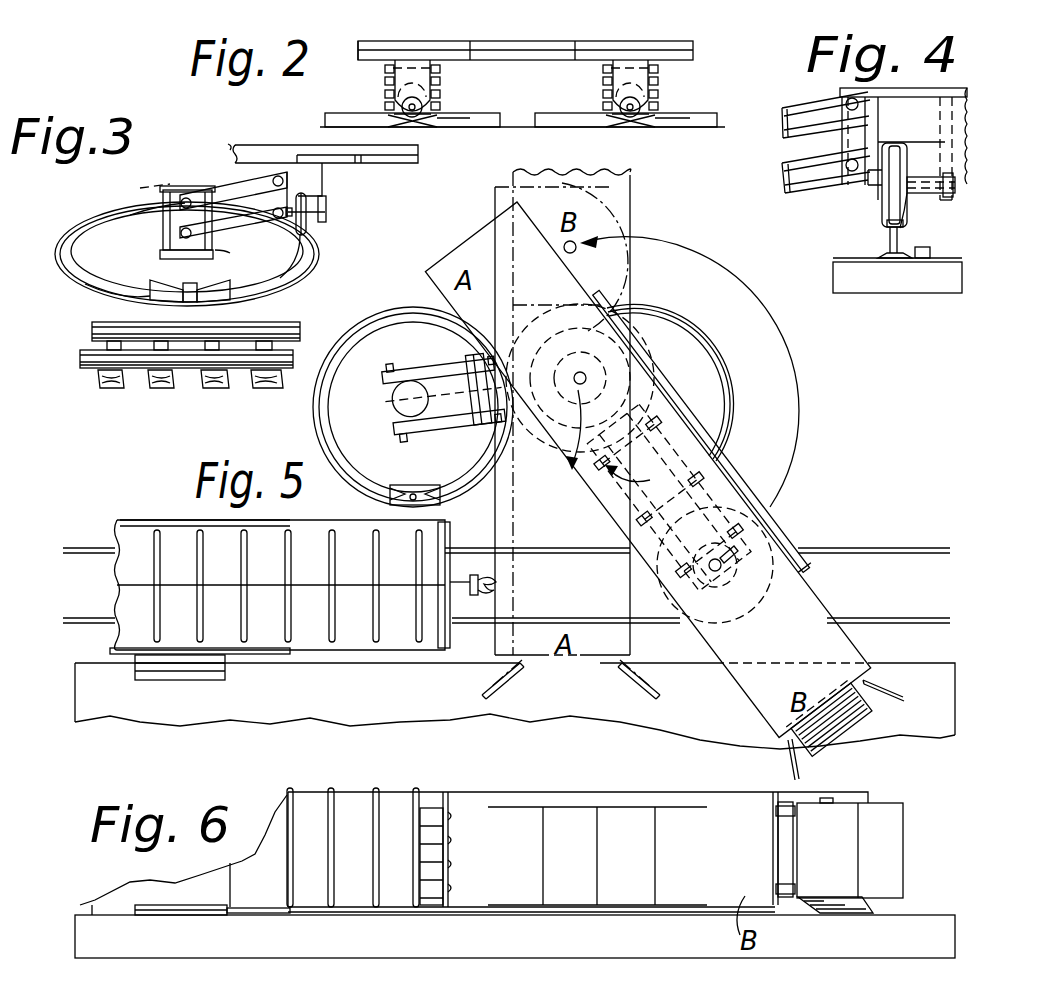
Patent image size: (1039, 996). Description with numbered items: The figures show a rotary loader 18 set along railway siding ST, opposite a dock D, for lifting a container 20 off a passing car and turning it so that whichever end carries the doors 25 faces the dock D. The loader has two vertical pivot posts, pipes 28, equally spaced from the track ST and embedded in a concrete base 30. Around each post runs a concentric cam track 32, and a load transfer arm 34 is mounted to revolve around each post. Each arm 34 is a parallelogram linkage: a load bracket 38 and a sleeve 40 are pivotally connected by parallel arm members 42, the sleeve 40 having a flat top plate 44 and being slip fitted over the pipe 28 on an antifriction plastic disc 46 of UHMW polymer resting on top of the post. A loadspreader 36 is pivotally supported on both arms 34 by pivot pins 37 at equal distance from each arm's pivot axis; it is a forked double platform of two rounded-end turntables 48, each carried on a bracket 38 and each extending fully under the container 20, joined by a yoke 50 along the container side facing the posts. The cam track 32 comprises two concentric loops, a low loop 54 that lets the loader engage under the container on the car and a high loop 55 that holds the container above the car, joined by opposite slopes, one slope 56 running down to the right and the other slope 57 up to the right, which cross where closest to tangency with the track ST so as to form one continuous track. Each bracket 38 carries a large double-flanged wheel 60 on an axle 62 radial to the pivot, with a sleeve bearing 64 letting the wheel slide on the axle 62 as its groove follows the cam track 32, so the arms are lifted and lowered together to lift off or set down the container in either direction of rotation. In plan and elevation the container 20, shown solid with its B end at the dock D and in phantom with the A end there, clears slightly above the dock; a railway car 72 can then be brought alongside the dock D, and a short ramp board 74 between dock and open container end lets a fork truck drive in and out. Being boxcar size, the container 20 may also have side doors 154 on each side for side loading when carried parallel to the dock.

In FIG. 2, the rotary loader 18 is at (686, 46).
In FIG. 3, the rotary loader 18 is at (183, 170).
In FIG. 4, the rotary loader 18 is at (797, 202).
In FIG. 5, the container 20 is at (836, 634).
In FIG. 6, the container 20 is at (483, 793).
In FIG. 5, the doors 25 is at (900, 698).
In FIG. 6, the doors 25 is at (870, 852).
In FIG. 3, the pivot post (pipe) 28 is at (215, 250).
In FIG. 5, the pivot post (pipe) 28 is at (640, 364).
In FIG. 3, the concrete base 30 is at (165, 256).
In FIG. 2, the cam track 32 is at (560, 120).
In FIG. 3, the cam track 32 is at (70, 240).
In FIG. 4, the cam track 32 is at (846, 297).
In FIG. 2, the load transfer arm 34 is at (402, 70).
In FIG. 3, the load transfer arm 34 is at (322, 190).
In FIG. 4, the load transfer arm 34 is at (813, 100).
In FIG. 5, the load transfer arm 34 is at (402, 378).
In FIG. 2, the loadspreader 36 is at (370, 60).
In FIG. 3, the loadspreader 36 is at (240, 152).
In FIG. 5, the loadspreader 36 is at (735, 552).
In FIG. 5, the pivot pins 37 is at (588, 372).
In FIG. 2, the load bracket 38 is at (608, 92).
In FIG. 3, the load bracket 38 is at (320, 206).
In FIG. 4, the load bracket 38 is at (856, 202).
In FIG. 3, the sleeve 40 is at (130, 215).
In FIG. 2, the parallel arm members 42 is at (658, 70).
In FIG. 3, the parallel arm members 42 is at (228, 196).
In FIG. 4, the parallel arm members 42 is at (786, 178).
In FIG. 5, the parallel arm members 42 is at (458, 386).
In FIG. 3, the flat top plate 44 is at (182, 186).
In FIG. 3, the antifriction plastic disc 46 is at (138, 191).
In FIG. 2, the turntables 48 is at (478, 50).
In FIG. 3, the turntables 48 is at (401, 165).
In FIG. 2, the yoke 50 is at (512, 58).
In FIG. 2, the low loop 54 is at (489, 128).
In FIG. 3, the low loop 54 is at (305, 262).
In FIG. 4, the low loop 54 is at (930, 295).
In FIG. 2, the high loop 55 is at (372, 114).
In FIG. 3, the high loop 55 is at (85, 285).
In FIG. 4, the high loop 55 is at (897, 295).
In FIG. 2, the slope down to the right 56 is at (430, 128).
In FIG. 3, the slope down to the right 56 is at (160, 291).
In FIG. 2, the slope up to the right 57 is at (436, 118).
In FIG. 3, the slope up to the right 57 is at (245, 295).
In FIG. 3, the double-flanged wheel 60 is at (308, 228).
In FIG. 4, the double-flanged wheel 60 is at (884, 215).
In FIG. 4, the axle 62 is at (930, 196).
In FIG. 4, the sleeve bearing 64 is at (906, 205).
In FIG. 5, the railway car 72 is at (120, 536).
In FIG. 6, the railway car 72 is at (218, 878).
In FIG. 5, the ramp board 74 is at (842, 730).
In FIG. 6, the ramp board 74 is at (845, 917).
In FIG. 6, the side doors 154 is at (615, 830).
In FIG. 3, the railway siding (track) ST is at (92, 368).
In FIG. 5, the railway siding (track) ST is at (876, 566).
In FIG. 5, the dock D is at (86, 668).
In FIG. 6, the dock D is at (90, 913).